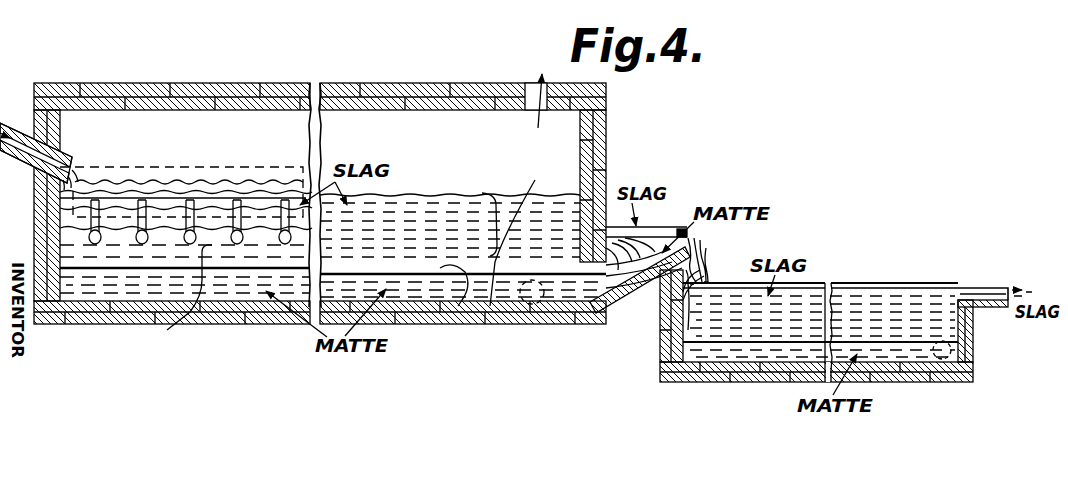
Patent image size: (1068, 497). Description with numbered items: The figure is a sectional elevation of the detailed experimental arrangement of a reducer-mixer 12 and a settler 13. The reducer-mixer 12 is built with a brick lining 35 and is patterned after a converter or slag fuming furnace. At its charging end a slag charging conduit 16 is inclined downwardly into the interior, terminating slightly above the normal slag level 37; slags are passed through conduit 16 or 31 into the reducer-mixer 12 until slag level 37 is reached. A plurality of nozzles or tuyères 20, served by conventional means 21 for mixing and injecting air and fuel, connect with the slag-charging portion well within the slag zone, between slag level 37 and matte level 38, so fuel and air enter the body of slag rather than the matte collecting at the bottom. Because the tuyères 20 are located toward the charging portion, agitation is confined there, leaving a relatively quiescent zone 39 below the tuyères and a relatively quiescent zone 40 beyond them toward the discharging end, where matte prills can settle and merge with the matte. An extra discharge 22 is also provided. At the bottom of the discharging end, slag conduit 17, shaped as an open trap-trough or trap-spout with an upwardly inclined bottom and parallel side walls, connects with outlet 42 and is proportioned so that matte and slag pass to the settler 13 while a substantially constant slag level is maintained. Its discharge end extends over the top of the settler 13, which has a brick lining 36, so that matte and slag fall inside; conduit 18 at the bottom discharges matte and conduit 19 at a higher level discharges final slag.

The reducer-mixer 12 is at (330, 88).
The settler 13 is at (866, 285).
The slag charging conduit 16 is at (42, 116).
The slag conduit 31 is at (8, 122).
The slag conduit 17 is at (636, 292).
The conduit 18 is at (975, 339).
The conduit 19 is at (996, 290).
The nozzles or tuyères 20 is at (240, 212).
The means for mixing the air and fuel 21 is at (130, 165).
The extra discharge 22 is at (519, 302).
The brick lining 35 is at (180, 97).
The brick lining 36 is at (772, 376).
The slag level 37 is at (180, 192).
The matte level 38 is at (458, 306).
The quiescent zone 39 is at (180, 301).
The quiescent zone 40 is at (522, 232).
The outlet 42 is at (590, 283).